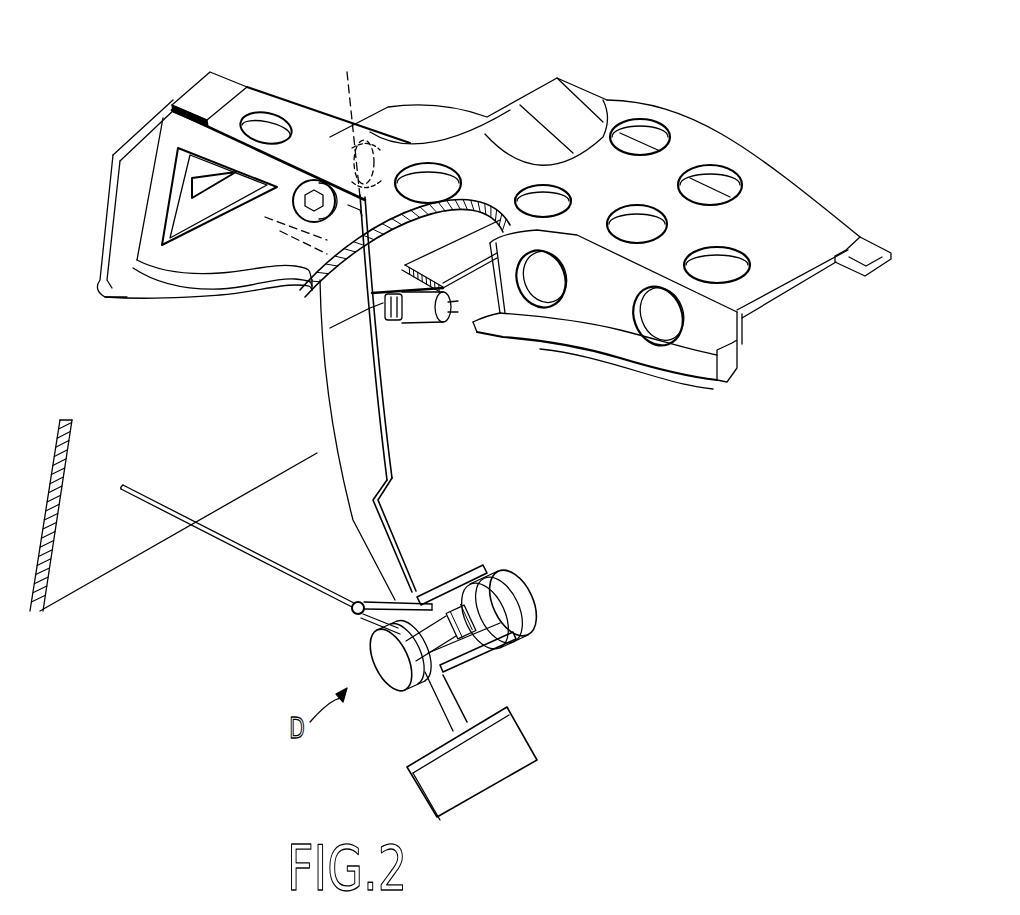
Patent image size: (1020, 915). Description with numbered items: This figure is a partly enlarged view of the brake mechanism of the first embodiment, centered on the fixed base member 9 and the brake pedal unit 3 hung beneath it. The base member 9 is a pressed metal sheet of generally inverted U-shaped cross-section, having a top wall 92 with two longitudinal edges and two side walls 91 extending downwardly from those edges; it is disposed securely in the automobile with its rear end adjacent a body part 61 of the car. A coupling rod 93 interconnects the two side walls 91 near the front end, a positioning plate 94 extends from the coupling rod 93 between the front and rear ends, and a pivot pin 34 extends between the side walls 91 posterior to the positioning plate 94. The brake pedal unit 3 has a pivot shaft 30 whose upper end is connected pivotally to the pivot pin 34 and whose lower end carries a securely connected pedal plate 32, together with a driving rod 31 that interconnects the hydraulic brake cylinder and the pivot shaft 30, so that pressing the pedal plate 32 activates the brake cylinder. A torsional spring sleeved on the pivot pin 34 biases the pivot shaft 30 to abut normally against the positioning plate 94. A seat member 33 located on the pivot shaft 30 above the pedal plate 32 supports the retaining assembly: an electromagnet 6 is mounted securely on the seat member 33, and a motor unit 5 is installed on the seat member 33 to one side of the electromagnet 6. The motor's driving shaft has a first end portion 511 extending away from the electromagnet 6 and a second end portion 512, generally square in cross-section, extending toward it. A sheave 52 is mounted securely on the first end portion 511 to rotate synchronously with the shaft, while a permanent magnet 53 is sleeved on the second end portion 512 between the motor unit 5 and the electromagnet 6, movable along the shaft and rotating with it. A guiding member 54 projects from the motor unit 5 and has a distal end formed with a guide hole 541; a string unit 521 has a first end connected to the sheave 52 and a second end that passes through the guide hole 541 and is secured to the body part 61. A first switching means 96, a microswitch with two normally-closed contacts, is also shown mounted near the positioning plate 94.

The fixed base member 9 is at (471, 99).
The top wall 92 is at (777, 227).
The side walls 91 is at (863, 256).
The coupling rod 93 is at (605, 309).
The positioning plate 94 is at (330, 328).
The first switching means 96 is at (423, 316).
The driving rod 31 is at (285, 228).
The pivot pin 34 is at (375, 155).
The brake pedal unit 3 is at (397, 417).
The pivot shaft 30 is at (368, 440).
The pedal plate 32 is at (500, 750).
The seat member 33 is at (470, 563).
The permanent magnet 53 is at (503, 636).
The first end portion 511 is at (472, 664).
The sheave 52 is at (380, 655).
The motor unit 5 is at (440, 605).
The electromagnet 6 is at (520, 598).
The second end portion 512 is at (510, 573).
The guiding member 54 is at (365, 548).
The guide hole 541 is at (354, 598).
The string unit 521 is at (230, 548).
The body part 61 is at (80, 538).